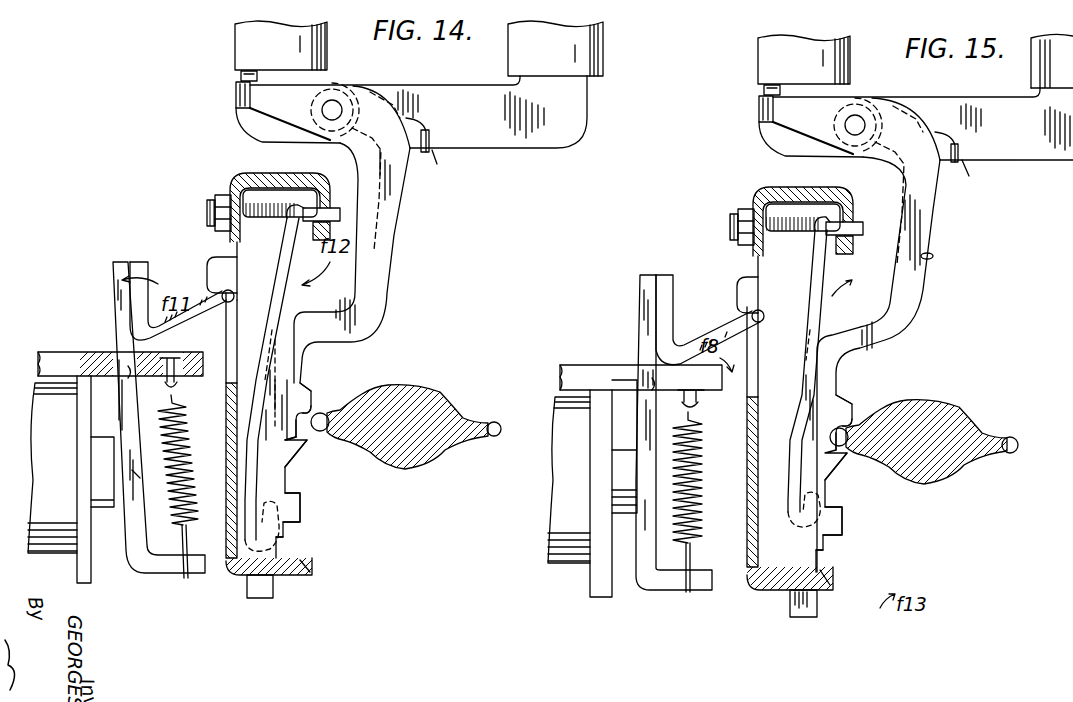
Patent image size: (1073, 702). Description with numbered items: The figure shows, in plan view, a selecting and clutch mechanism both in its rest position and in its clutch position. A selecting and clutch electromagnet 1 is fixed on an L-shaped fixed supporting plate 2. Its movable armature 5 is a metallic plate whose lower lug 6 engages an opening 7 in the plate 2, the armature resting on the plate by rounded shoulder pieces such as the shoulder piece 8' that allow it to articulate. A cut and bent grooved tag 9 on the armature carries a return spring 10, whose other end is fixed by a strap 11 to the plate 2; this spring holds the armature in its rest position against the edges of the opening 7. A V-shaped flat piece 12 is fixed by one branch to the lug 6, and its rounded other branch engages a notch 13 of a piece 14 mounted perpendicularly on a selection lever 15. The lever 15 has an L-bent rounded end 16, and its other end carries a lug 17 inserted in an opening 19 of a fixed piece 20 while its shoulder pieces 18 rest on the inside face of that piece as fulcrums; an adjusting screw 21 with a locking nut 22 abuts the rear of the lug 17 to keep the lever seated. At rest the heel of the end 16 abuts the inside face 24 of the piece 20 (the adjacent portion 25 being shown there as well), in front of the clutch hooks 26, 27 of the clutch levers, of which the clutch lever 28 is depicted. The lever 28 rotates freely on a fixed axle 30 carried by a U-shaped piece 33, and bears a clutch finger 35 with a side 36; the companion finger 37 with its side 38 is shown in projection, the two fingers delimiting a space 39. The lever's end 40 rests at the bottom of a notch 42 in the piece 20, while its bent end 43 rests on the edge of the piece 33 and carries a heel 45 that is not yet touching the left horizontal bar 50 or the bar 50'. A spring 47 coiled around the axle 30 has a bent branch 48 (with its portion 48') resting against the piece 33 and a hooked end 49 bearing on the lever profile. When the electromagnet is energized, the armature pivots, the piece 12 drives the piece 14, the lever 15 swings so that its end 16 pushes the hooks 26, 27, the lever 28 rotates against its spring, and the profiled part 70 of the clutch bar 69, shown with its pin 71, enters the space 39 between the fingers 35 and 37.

In FIG. 14, the selecting and clutch electromagnet 1 is at (62, 540).
In FIG. 15, the selecting and clutch electromagnet 1 is at (576, 545).
In FIG. 14, the fixed supporting plate 2 is at (55, 358).
In FIG. 15, the fixed supporting plate 2 is at (592, 366).
In FIG. 14, the movable armature 5 is at (140, 478).
In FIG. 15, the movable armature 5 is at (640, 530).
In FIG. 14, the lug 6 is at (116, 272).
In FIG. 15, the lug 6 is at (646, 275).
In FIG. 14, the opening 7 is at (128, 368).
In FIG. 14, the shoulder piece 8' is at (143, 384).
In FIG. 15, the shoulder piece 8' is at (636, 404).
In FIG. 14, the grooved tag 9 is at (190, 580).
In FIG. 15, the grooved tag 9 is at (700, 584).
In FIG. 14, the return spring 10 is at (189, 462).
In FIG. 15, the return spring 10 is at (703, 493).
In FIG. 14, the strap 11 is at (179, 380).
In FIG. 15, the strap 11 is at (700, 398).
In FIG. 14, the flat piece bent in V shape 12 is at (138, 262).
In FIG. 15, the flat piece bent in V shape 12 is at (666, 275).
In FIG. 14, the notch 13 is at (235, 295).
In FIG. 15, the notch 13 is at (764, 314).
In FIG. 14, the piece 14 is at (207, 271).
In FIG. 15, the piece 14 is at (737, 294).
In FIG. 14, the selection lever 15 is at (262, 362).
In FIG. 15, the selection lever 15 is at (818, 326).
In FIG. 14, the rounded end 16 is at (275, 446).
In FIG. 15, the rounded end 16 is at (807, 501).
In FIG. 14, the lug 17 is at (341, 218).
In FIG. 15, the lug 17 is at (864, 226).
In FIG. 14, the shoulder piece 18 is at (281, 372).
In FIG. 15, the shoulder piece 18 is at (812, 245).
In FIG. 14, the opening 19 is at (322, 200).
In FIG. 15, the opening 19 is at (845, 214).
In FIG. 14, the fixed piece 20 is at (268, 183).
In FIG. 15, the fixed piece 20 is at (796, 196).
In FIG. 14, the adjusting screw 21 is at (262, 228).
In FIG. 15, the adjusting screw 21 is at (784, 242).
In FIG. 14, the locking nut 22 is at (218, 200).
In FIG. 15, the locking nut 22 is at (744, 210).
In FIG. 14, the inside face 24 is at (226, 496).
In FIG. 14, the upper frame leg 25 is at (228, 340).
In FIG. 15, the upper frame leg 25 is at (759, 360).
In FIG. 14, the clutch hook 26 is at (303, 519).
In FIG. 15, the clutch hook 26 is at (845, 521).
In FIG. 14, the clutch hook 27 is at (293, 534).
In FIG. 15, the clutch hook 27 is at (838, 540).
In FIG. 14, the clutch lever 28 is at (418, 317).
In FIG. 15, the clutch lever 28 is at (908, 318).
In FIG. 14, the fixed axle 30 is at (322, 110).
In FIG. 15, the fixed axle 30 is at (866, 127).
In FIG. 14, the U-shaped piece 33 is at (270, 132).
In FIG. 15, the U-shaped piece 33 is at (792, 146).
In FIG. 14, the clutch finger 35 is at (304, 393).
In FIG. 15, the clutch finger 35 is at (842, 404).
In FIG. 14, the side of clutch finger 36 is at (326, 416).
In FIG. 15, the side of clutch finger 36 is at (848, 430).
In FIG. 14, the clutch finger 37 is at (297, 456).
In FIG. 15, the clutch finger 37 is at (842, 466).
In FIG. 14, the side of clutch finger 38 is at (302, 438).
In FIG. 14, the space 39 is at (303, 432).
In FIG. 15, the space 39 is at (838, 440).
In FIG. 14, the end of clutch lever 40 is at (268, 591).
In FIG. 15, the end of clutch lever 40 is at (818, 614).
In FIG. 14, the notch 42 is at (298, 572).
In FIG. 15, the notch 42 is at (836, 586).
In FIG. 14, the bent end 43 is at (240, 96).
In FIG. 15, the bent end 43 is at (762, 112).
In FIG. 14, the heel 45 is at (241, 77).
In FIG. 15, the heel 45 is at (764, 91).
In FIG. 14, the spring 47 is at (379, 171).
In FIG. 15, the spring 47 is at (930, 195).
In FIG. 14, the bent branch of spring 48 is at (436, 135).
In FIG. 15, the bent branch of spring 48 is at (980, 147).
In FIG. 14, the clip end 48' is at (436, 168).
In FIG. 15, the clip end 48' is at (966, 181).
In FIG. 15, the hooked end of spring branch 49 is at (933, 254).
In FIG. 14, the left horizontal bar 50 is at (261, 45).
In FIG. 15, the left horizontal bar 50 is at (782, 59).
In FIG. 14, the block 50' is at (578, 48).
In FIG. 15, the block 50' is at (1052, 61).
In FIG. 14, the clutch bar 69 is at (418, 462).
In FIG. 15, the clutch bar 69 is at (935, 402).
In FIG. 14, the profiled part of clutch bar 70 is at (328, 415).
In FIG. 15, the profiled part of clutch bar 70 is at (850, 446).
In FIG. 14, the cam pin 71 is at (495, 423).
In FIG. 15, the cam pin 71 is at (1016, 440).